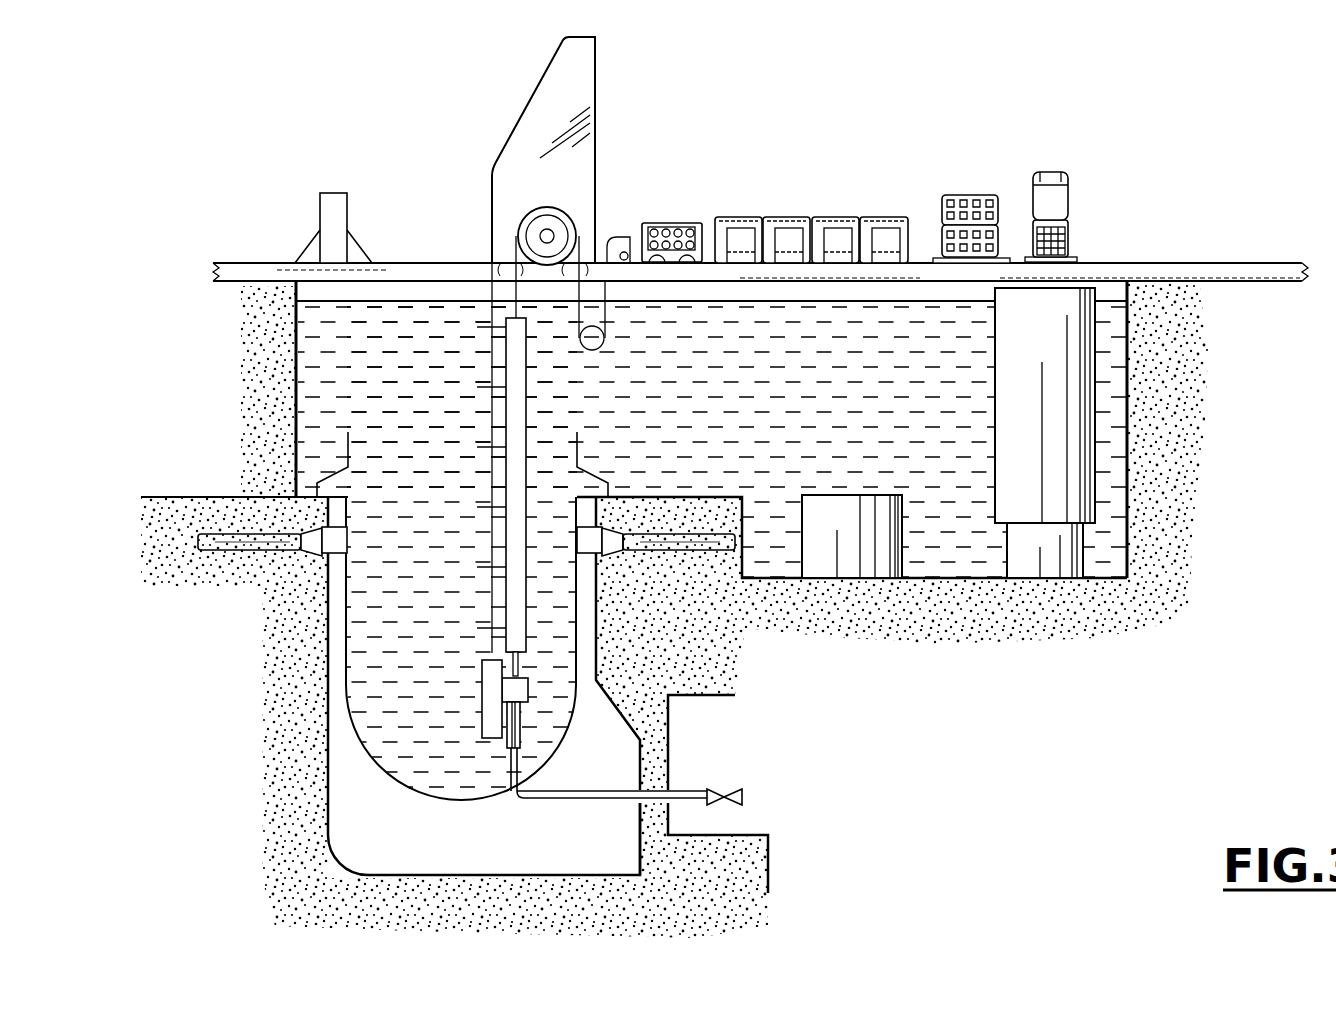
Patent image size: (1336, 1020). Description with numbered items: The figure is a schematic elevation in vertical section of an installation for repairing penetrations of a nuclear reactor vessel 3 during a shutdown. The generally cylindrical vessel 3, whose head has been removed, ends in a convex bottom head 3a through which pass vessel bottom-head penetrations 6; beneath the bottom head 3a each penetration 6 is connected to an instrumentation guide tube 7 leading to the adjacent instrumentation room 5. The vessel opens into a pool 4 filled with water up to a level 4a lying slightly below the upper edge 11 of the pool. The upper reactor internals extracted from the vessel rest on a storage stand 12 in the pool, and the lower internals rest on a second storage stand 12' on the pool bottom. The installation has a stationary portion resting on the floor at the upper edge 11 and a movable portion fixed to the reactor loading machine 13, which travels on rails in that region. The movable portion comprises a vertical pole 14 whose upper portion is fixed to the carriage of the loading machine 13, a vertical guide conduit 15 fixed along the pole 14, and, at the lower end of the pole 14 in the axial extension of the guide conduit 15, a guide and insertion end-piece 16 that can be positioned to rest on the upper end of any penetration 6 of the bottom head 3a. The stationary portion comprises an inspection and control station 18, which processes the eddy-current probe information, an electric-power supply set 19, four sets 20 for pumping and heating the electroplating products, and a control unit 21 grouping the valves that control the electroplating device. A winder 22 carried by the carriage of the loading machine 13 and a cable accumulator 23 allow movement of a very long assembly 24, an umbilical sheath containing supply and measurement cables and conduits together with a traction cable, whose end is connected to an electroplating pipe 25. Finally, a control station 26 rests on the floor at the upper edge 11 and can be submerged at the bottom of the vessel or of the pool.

The nuclear reactor vessel 3 is at (357, 641).
The convex bottom head 3a is at (402, 787).
The pool 4 is at (872, 407).
The water level 4a is at (928, 300).
The instrumentation room 5 is at (843, 772).
The vessel bottom-head penetration 6 is at (510, 767).
The instrumentation guide tube 7 is at (603, 797).
The upper edge of the pool 11 is at (1262, 272).
The storage stand 12 is at (865, 594).
The storage stand 12' is at (1072, 491).
The reactor loading machine 13 is at (527, 137).
The vertical pole 14 is at (490, 477).
The vertical guide conduit 15 is at (516, 447).
The guide and insertion end-piece 16 is at (517, 692).
The inspection and control station 18 is at (1072, 162).
The electric-power supply set 19 is at (962, 188).
The sets for pumping and heating 20 is at (883, 220).
The control unit 21 is at (665, 217).
The winder 22 is at (537, 233).
The cable accumulator 23 is at (590, 339).
The umbilical assembly 24 is at (512, 294).
The electroplating pipe 25 is at (522, 663).
The control station 26 is at (333, 223).